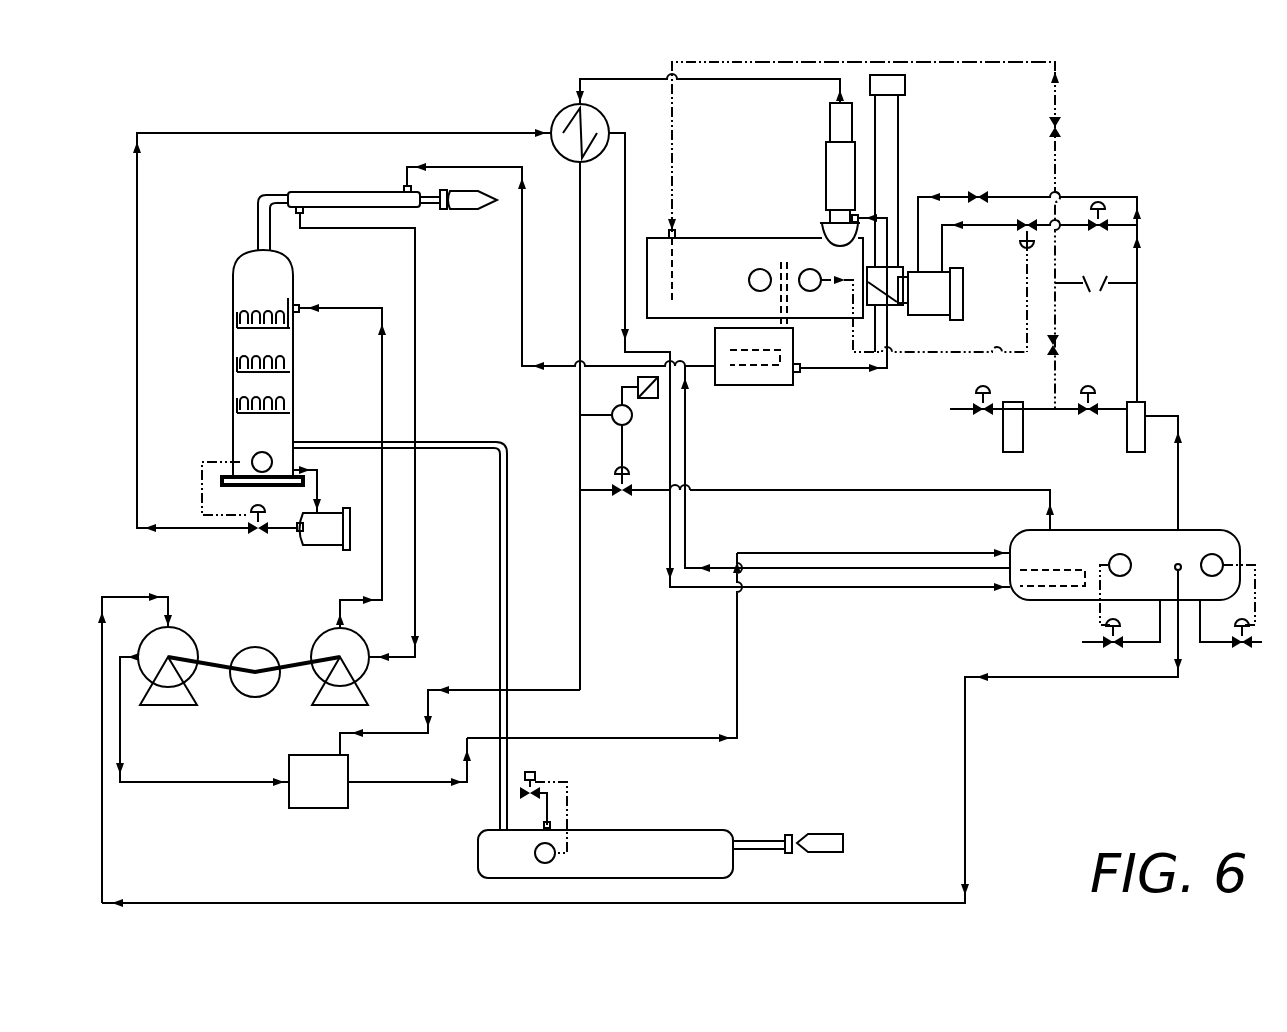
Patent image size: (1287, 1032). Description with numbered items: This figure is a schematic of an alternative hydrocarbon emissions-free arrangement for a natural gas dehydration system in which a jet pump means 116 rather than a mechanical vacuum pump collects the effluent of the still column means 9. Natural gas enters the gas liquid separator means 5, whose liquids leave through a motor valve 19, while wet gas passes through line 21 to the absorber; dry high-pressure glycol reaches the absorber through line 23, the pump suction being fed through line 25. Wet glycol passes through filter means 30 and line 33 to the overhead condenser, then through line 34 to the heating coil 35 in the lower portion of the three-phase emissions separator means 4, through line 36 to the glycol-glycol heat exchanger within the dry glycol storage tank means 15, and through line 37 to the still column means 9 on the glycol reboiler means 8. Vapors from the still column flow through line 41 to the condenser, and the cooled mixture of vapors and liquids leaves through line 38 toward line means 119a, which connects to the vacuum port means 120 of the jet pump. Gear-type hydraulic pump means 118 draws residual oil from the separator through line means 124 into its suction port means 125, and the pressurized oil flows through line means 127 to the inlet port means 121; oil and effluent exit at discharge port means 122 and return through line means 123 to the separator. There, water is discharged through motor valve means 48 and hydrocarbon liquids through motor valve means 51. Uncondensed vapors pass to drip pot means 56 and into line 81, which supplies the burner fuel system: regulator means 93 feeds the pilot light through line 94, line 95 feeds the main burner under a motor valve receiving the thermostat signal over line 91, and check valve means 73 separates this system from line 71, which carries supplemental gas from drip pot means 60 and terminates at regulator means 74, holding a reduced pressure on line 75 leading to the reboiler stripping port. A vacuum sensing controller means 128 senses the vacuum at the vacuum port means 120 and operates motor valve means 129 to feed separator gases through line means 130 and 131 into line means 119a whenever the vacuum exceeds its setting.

The three-phase emissions separator means 4 is at (1202, 529).
The gas liquid separator means 5 is at (659, 828).
The glycol reboiler means 8 is at (690, 236).
The still column means 9 is at (826, 194).
The dry glycol storage tank means 15 is at (752, 386).
The motor valve 19 is at (534, 774).
The line 21 is at (509, 482).
The line 23 is at (326, 310).
The line 25 is at (416, 268).
The filter means 30 is at (306, 541).
The line 33 is at (140, 426).
The line 34 is at (623, 187).
The heating coil 35 is at (1038, 592).
The line 36 is at (857, 572).
The line 37 is at (862, 370).
The line 38 is at (578, 218).
The line 41 is at (743, 81).
The motor valve means 48 is at (1110, 646).
The motor valve means 51 is at (1242, 658).
The drip pot means 56 is at (1147, 405).
The drip pot means 60 is at (1024, 425).
The line 71 is at (1057, 163).
The check valve means 73 is at (1092, 296).
The regulator means 74 is at (1065, 127).
The line 75 is at (970, 60).
The line 81 is at (1140, 302).
The line 91 is at (1002, 350).
The regulator means 93 is at (979, 190).
The line 94 is at (918, 196).
The line 95 is at (944, 250).
The jet pump means 116 is at (338, 810).
The gear-type hydraulic pump means 118 is at (196, 678).
The line means 119a is at (578, 632).
The vacuum port means 120 is at (350, 737).
The inlet port means 121 is at (289, 784).
The discharge port means 122 is at (348, 786).
The line means 123 is at (738, 664).
The line means 124 is at (966, 716).
The suction port means 125 is at (172, 612).
The line means 127 is at (152, 786).
The vacuum sensing controller means 128 is at (631, 421).
The motor valve means 129 is at (620, 498).
The line means 130 is at (905, 492).
The line means 131 is at (592, 494).